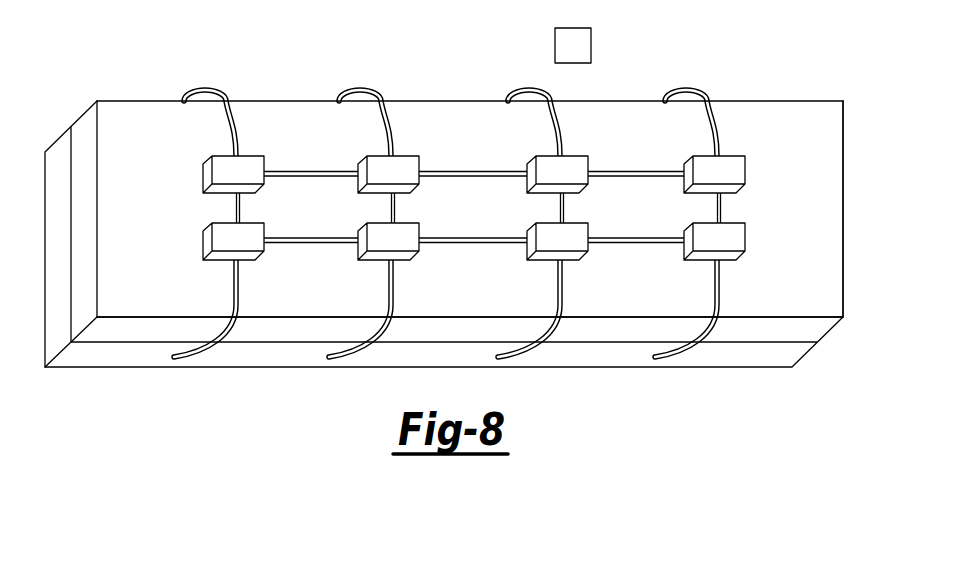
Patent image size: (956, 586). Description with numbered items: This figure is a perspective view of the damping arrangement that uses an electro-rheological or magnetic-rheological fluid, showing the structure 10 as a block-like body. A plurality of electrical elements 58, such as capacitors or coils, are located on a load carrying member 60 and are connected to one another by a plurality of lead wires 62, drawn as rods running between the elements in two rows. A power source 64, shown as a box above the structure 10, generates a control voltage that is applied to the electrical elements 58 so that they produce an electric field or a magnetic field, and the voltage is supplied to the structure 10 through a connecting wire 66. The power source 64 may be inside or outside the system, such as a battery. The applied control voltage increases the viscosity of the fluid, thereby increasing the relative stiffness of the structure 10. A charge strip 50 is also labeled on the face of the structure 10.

The structure 10 is at (785, 355).
The charge strip 50 is at (785, 192).
The electrical elements 58 is at (400, 167).
The load carrying member 60 is at (822, 100).
The lead wires 62 is at (305, 172).
The power source 64 is at (572, 156).
The connecting wire 66 is at (232, 325).